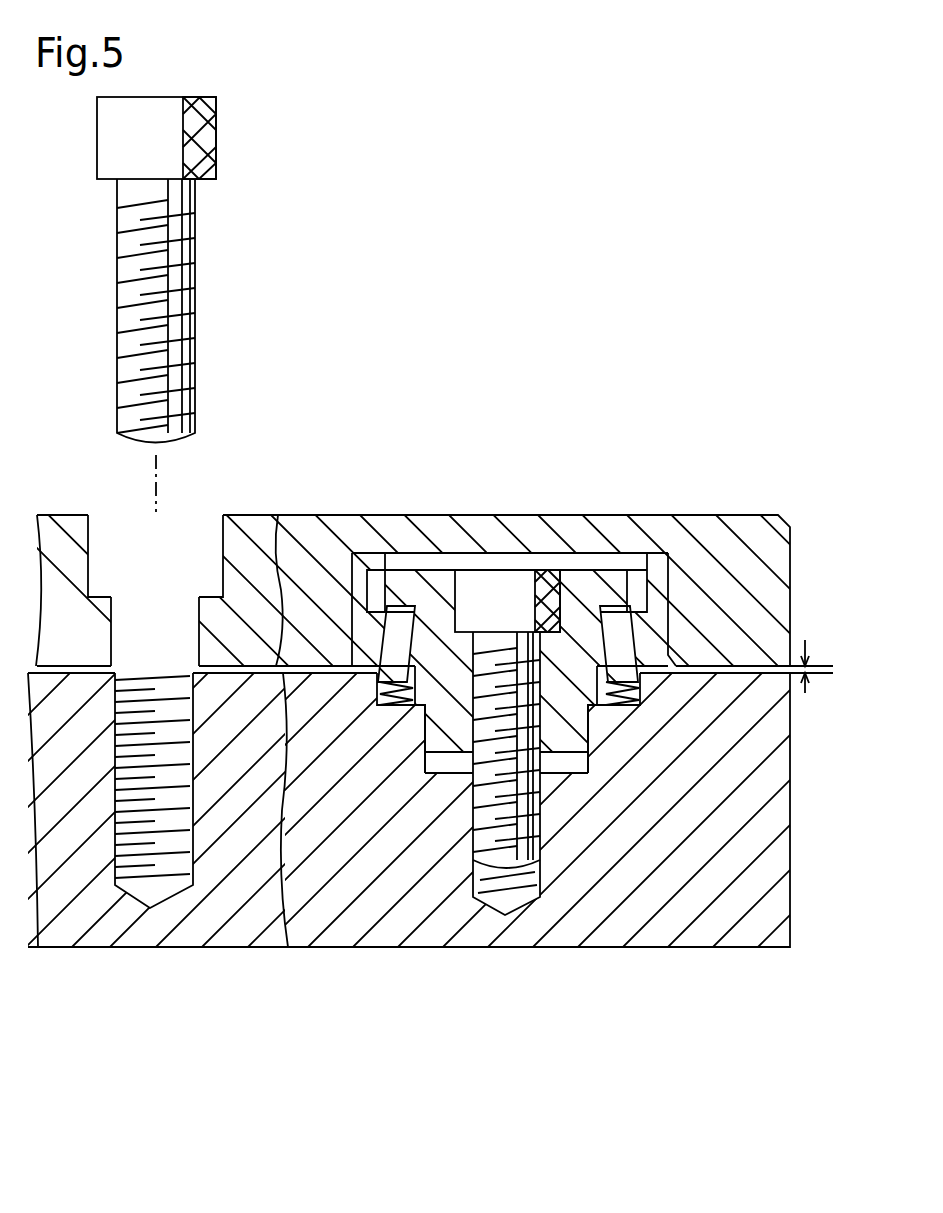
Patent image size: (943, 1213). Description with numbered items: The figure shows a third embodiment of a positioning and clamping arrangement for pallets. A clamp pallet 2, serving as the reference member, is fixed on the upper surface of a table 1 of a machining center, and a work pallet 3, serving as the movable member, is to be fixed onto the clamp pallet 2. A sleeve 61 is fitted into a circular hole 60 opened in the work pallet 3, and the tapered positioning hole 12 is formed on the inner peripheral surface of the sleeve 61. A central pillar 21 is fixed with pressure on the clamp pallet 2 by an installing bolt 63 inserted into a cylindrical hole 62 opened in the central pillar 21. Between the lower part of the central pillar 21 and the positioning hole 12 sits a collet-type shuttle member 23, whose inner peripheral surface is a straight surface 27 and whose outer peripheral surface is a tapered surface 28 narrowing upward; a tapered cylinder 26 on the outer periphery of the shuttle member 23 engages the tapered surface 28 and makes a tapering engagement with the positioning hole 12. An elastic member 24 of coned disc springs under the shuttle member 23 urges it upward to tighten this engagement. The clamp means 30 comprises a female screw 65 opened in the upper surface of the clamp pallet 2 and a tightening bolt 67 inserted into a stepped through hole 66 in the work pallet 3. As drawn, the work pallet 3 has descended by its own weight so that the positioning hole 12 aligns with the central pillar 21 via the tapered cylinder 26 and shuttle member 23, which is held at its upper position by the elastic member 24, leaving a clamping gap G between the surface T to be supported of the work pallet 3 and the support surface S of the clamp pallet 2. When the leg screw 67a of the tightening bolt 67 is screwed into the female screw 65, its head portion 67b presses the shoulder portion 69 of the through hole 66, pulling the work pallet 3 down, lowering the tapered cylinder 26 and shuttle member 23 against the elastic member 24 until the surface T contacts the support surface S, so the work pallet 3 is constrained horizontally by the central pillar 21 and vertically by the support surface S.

The table 1 is at (600, 950).
The clamp pallet 2 is at (706, 950).
The work pallet 3 is at (710, 515).
The positioning hole 12 is at (387, 570).
The central pillar 21 is at (422, 566).
The shuttle member 23 is at (607, 570).
The elastic member 24 is at (594, 762).
The tapered cylinder 26 is at (683, 583).
The straight surface 27 is at (590, 706).
The tapered surface 28 is at (650, 700).
The clamp means 30 is at (246, 277).
The circular hole 60 is at (680, 640).
The sleeve 61 is at (653, 550).
The cylindrical hole 62 is at (480, 668).
The installing bolt 63 is at (482, 570).
The female screw 65 is at (188, 860).
The stepped through hole 66 is at (216, 515).
The tightening bolt 67 is at (200, 222).
The leg screw 67a is at (190, 347).
The head portion 67b is at (218, 142).
The shoulder portion 69 is at (212, 610).
The surface to be supported T is at (722, 657).
The clamping gap G is at (829, 668).
The support surface S is at (783, 690).